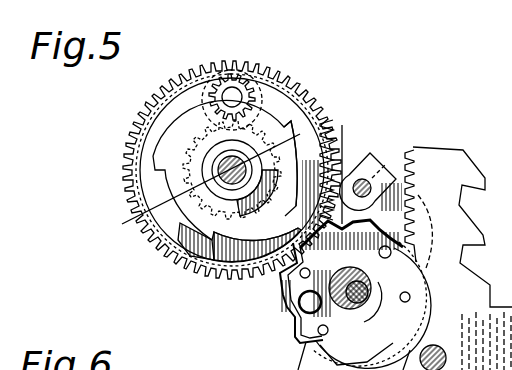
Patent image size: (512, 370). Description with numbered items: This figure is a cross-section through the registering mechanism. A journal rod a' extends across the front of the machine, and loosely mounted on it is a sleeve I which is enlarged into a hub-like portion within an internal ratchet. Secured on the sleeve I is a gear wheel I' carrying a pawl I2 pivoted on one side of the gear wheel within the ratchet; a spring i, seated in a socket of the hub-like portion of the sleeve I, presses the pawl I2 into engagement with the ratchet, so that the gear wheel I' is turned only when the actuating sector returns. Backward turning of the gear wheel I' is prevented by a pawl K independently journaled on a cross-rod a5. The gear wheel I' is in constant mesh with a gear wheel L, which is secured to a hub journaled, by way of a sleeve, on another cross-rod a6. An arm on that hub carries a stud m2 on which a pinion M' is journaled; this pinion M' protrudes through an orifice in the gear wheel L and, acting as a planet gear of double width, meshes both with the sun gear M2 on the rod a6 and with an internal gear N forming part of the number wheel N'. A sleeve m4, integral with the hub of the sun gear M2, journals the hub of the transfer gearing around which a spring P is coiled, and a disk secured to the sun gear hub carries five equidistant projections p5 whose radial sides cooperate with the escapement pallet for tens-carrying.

The internal gear N is at (202, 165).
The projection p5 is at (206, 102).
The spring P is at (269, 110).
The gear wheel L is at (184, 263).
The sun gear M2 is at (212, 158).
The number wheel N' is at (229, 234).
The planet pinion M' is at (232, 71).
The stud m2 is at (217, 83).
The sleeve m4 is at (292, 138).
The cross-rod a6 is at (190, 196).
The gear wheel I' is at (361, 156).
The cross-rod a5 is at (374, 176).
The pawl K is at (412, 197).
The pawl I2 is at (290, 293).
The spring i is at (319, 278).
The journal rod a' is at (397, 294).
The sleeve I is at (411, 306).